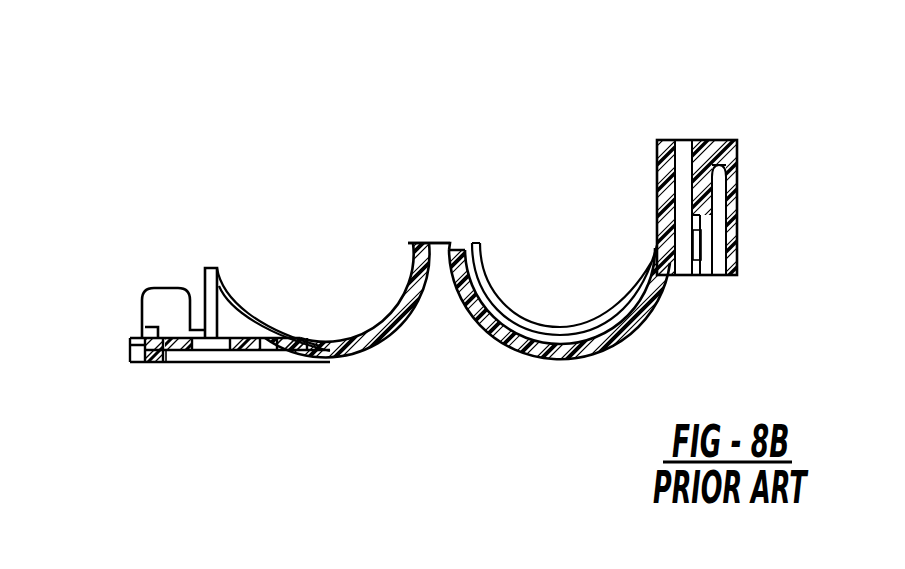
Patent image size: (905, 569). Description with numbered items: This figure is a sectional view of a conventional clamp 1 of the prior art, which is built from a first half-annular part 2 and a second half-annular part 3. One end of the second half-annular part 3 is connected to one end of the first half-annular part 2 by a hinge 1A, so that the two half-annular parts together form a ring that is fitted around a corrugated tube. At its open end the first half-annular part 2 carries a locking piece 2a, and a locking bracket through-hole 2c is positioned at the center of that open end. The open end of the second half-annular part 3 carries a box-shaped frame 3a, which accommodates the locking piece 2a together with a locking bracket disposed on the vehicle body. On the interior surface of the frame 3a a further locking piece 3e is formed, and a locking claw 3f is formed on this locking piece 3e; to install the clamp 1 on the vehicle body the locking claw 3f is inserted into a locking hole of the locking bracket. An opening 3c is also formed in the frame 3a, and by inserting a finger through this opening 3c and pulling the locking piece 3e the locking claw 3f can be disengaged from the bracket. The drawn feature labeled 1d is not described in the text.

The clamp 1 is at (335, 324).
The hinge 1A is at (430, 243).
The shell hook / locating lug 1d is at (233, 288).
The first half-annular part 2 is at (347, 352).
The locking piece 2a is at (167, 303).
The locking bracket through-hole 2c is at (168, 360).
The second half-annular part 3 is at (588, 352).
The box-shaped frame 3a is at (685, 140).
The opening 3c is at (738, 243).
The locking piece 3e is at (698, 276).
The locking claw 3f is at (695, 226).